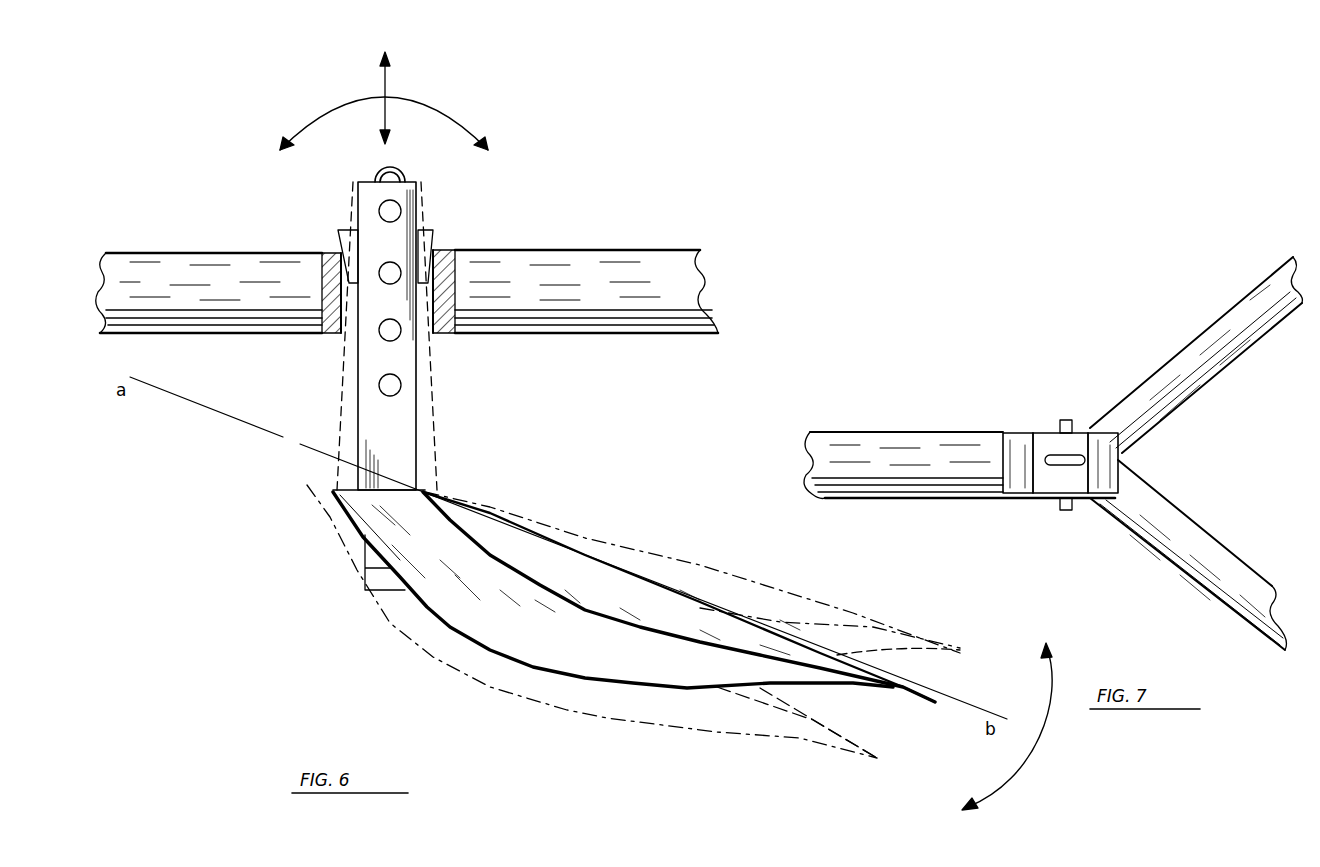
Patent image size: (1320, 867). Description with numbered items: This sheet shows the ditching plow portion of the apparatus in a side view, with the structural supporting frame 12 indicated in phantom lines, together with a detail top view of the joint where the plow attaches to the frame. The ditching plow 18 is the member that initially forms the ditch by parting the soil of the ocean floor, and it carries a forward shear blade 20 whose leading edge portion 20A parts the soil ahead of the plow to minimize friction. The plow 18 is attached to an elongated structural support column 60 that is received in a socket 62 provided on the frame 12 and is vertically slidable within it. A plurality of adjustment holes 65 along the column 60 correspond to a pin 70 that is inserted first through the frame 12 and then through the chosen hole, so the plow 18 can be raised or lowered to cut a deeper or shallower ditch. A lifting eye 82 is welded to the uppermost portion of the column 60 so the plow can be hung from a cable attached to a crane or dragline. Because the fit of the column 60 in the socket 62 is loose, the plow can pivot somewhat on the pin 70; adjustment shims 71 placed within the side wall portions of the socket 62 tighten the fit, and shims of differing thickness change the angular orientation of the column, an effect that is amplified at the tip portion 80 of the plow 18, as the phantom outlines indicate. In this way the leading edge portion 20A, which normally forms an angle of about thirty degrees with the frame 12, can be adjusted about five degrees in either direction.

In FIG. 6, the frame 12 is at (206, 316).
In FIG. 7, the frame 12 is at (918, 490).
In FIG. 6, the ditching plow 18 is at (528, 635).
In FIG. 6, the shear blade 20 is at (510, 547).
In FIG. 6, the leading edge portion 20A is at (630, 563).
In FIG. 6, the structural support column 60 is at (418, 230).
In FIG. 6, the socket 62 is at (346, 335).
In FIG. 7, the socket 62 is at (1024, 462).
In FIG. 6, the adjustment holes 65 is at (380, 265).
In FIG. 7, the pin 70 is at (1065, 420).
In FIG. 6, the adjustment shims 71 is at (338, 234).
In FIG. 7, the adjustment shims 71 is at (1014, 440).
In FIG. 6, the tip portion 80 is at (895, 686).
In FIG. 7, the tip portion 80 is at (1064, 466).
In FIG. 6, the lifting eye 82 is at (398, 165).